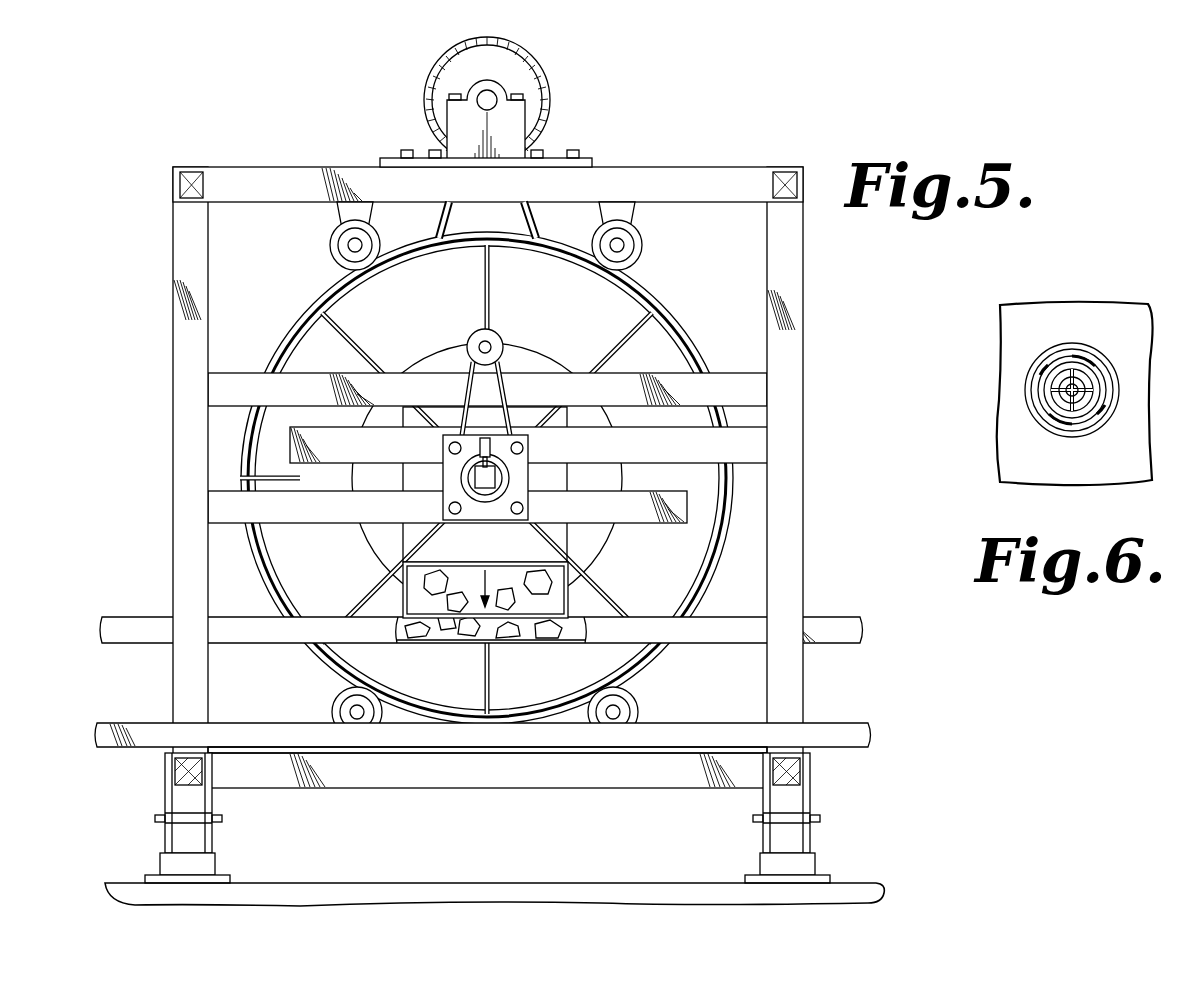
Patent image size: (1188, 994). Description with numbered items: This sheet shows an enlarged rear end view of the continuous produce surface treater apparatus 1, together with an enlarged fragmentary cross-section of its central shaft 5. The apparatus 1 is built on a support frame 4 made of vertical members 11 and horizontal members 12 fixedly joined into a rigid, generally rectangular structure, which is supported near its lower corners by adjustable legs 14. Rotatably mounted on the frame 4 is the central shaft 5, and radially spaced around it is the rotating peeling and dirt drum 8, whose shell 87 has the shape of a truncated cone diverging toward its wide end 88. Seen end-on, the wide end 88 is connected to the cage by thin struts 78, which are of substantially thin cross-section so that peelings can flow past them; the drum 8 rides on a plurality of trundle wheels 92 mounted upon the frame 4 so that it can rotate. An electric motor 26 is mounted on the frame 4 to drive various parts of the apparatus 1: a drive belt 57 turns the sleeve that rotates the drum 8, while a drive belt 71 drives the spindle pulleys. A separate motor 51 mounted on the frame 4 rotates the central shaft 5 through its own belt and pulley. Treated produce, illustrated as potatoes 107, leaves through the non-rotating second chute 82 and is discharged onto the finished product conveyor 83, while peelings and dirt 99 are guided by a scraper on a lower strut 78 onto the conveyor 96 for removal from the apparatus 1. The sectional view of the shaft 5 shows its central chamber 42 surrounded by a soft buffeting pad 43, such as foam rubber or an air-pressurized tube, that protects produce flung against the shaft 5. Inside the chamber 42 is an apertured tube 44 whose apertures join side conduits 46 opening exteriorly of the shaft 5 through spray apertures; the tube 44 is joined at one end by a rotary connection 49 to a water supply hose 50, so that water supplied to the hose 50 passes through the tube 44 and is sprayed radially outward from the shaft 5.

In FIG. 5, the continuous produce surface treater apparatus 1 is at (152, 450).
In FIG. 5, the support frame 4 is at (806, 598).
In FIG. 6, the central shaft 5 is at (1100, 420).
In FIG. 5, the rotating peeling and dirt drum 8 is at (706, 362).
In FIG. 5, the vertical members 11 is at (806, 402).
In FIG. 5, the horizontal members 12 is at (705, 167).
In FIG. 5, the leg bracket 14 is at (213, 848).
In FIG. 5, the electric motor 26 is at (550, 85).
In FIG. 6, the central chamber 42 is at (1100, 365).
In FIG. 6, the buffeting pad 43 is at (1062, 356).
In FIG. 6, the tube 44 is at (1055, 420).
In FIG. 6, the side conduits 46 is at (1055, 360).
In FIG. 5, the rotary connection 49 is at (490, 478).
In FIG. 5, the water supply hose 50 is at (492, 445).
In FIG. 5, the motor 51 is at (505, 340).
In FIG. 5, the drive belt 57 is at (460, 230).
In FIG. 5, the drive belt 71 is at (543, 231).
In FIG. 5, the struts 78 is at (490, 320).
In FIG. 5, the second chute 82 is at (568, 606).
In FIG. 5, the finished product conveyor 83 is at (494, 562).
In FIG. 5, the shell 87 is at (672, 343).
In FIG. 5, the wide end 88 is at (602, 280).
In FIG. 5, the trundle wheels 92 is at (330, 243).
In FIG. 5, the conveyor 96 is at (700, 727).
In FIG. 5, the peelings and dirt 99 is at (682, 727).
In FIG. 5, the potatoes 107 is at (447, 597).